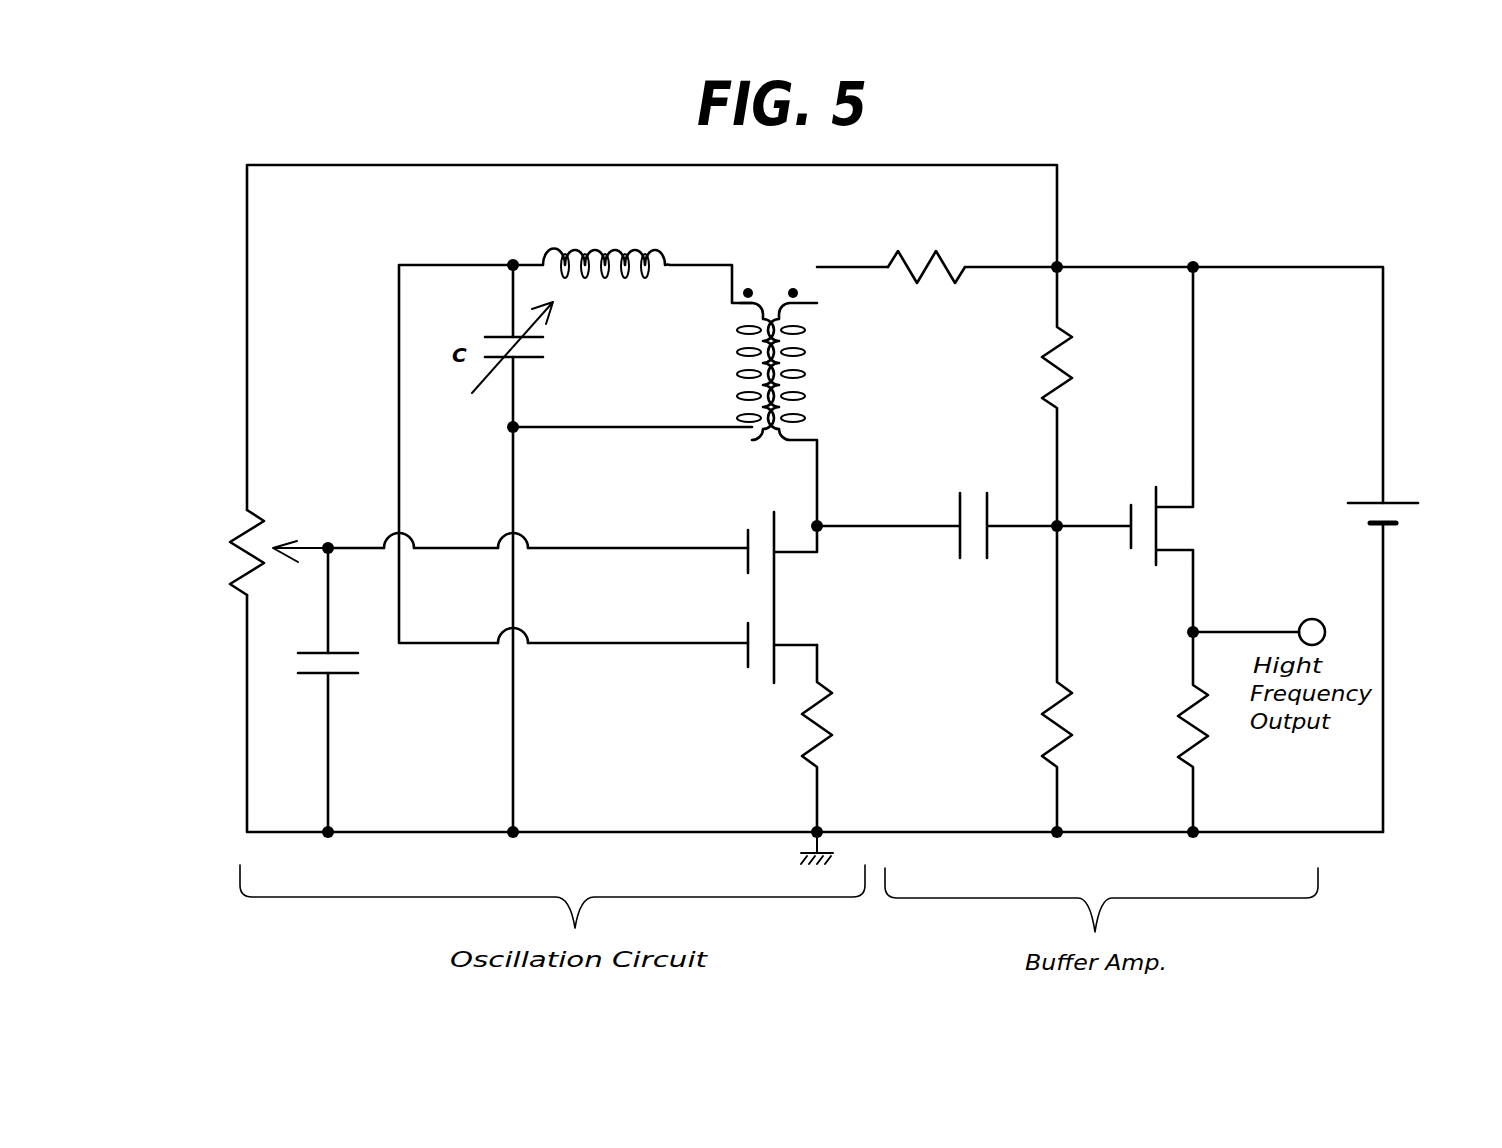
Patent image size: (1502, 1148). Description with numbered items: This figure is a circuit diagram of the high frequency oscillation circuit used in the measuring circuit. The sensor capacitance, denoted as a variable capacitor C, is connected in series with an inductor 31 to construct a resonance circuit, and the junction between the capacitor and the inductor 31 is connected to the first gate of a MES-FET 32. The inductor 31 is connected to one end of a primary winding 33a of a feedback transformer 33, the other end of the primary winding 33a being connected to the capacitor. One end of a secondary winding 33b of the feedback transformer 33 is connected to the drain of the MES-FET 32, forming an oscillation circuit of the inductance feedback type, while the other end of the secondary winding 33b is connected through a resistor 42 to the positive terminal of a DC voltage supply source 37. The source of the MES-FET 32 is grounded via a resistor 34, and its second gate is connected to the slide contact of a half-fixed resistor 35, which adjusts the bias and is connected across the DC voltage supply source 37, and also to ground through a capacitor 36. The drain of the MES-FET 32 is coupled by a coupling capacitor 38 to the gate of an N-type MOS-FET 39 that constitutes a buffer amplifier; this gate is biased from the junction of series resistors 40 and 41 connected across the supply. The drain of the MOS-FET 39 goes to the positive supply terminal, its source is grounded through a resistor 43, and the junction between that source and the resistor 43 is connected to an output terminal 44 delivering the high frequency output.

The inductor 31 is at (562, 245).
The MES-FET 32 is at (762, 675).
The feedback transformer 33 is at (781, 355).
The primary winding 33a is at (742, 382).
The secondary winding 33b is at (810, 396).
The resistor 34 is at (810, 718).
The half-fixed resistor 35 is at (242, 570).
The capacitor 36 is at (343, 674).
The DC voltage supply source 37 is at (1405, 490).
The coupling capacitor 38 is at (980, 492).
The N-type MOS-FET 39 is at (1192, 530).
The series resistor 40 is at (1068, 366).
The series resistor 41 is at (1072, 736).
The resistor 42 is at (928, 278).
The resistor 43 is at (1210, 736).
The output terminal 44 is at (1313, 619).